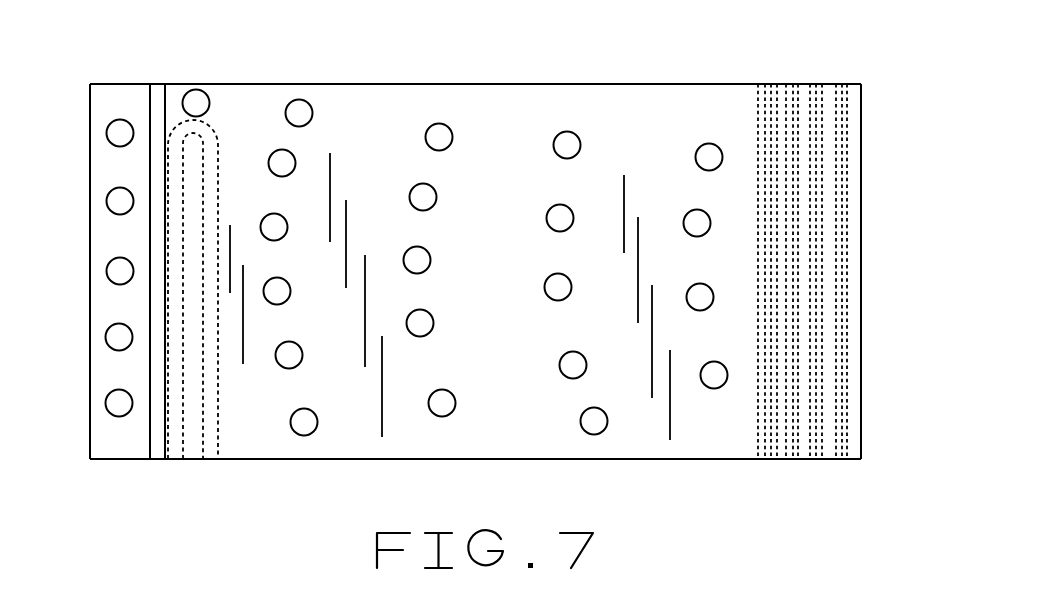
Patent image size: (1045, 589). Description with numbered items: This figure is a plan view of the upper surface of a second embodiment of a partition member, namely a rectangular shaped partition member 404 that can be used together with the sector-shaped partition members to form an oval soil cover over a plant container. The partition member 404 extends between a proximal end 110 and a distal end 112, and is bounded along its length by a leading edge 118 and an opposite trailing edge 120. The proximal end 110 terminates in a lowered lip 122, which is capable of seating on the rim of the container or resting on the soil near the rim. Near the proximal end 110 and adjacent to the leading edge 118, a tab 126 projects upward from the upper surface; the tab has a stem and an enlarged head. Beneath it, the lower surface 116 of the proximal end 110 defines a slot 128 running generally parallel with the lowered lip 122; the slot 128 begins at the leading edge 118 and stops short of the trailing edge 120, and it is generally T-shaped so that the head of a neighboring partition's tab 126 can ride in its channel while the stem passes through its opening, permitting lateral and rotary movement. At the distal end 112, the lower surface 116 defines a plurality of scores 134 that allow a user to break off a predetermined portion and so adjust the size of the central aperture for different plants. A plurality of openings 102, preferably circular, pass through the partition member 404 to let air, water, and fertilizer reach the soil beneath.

The rectangular shaped partition member 404 is at (258, 70).
The trailing edge 120 is at (355, 85).
The leading edge 118 is at (253, 460).
The lowered lip 122 is at (105, 232).
The proximal end 110 is at (177, 158).
The slot 128 is at (187, 292).
The tab 126 is at (199, 91).
The openings 102 is at (444, 124).
The lower surface 116 is at (665, 150).
The distal end 112 is at (750, 160).
The scores 134 is at (845, 183).